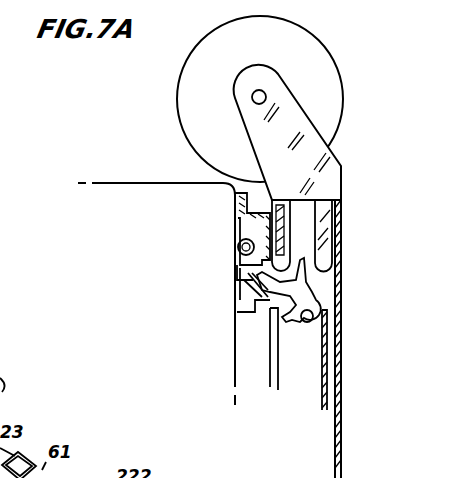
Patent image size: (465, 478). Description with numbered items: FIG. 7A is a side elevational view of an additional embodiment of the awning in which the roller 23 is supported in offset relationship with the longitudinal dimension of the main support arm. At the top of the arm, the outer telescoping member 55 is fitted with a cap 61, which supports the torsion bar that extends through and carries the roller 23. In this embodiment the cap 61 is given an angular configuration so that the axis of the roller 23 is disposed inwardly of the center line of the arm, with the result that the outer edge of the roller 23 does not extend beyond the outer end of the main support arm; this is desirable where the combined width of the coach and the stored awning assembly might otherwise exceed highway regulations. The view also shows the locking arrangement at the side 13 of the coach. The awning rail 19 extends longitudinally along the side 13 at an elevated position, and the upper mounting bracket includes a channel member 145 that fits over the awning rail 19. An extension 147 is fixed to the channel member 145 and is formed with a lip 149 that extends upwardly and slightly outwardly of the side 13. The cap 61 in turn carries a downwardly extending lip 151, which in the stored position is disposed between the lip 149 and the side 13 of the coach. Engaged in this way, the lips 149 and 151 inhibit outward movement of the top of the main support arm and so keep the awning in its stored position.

The roller 23 is at (312, 62).
The cap 61 is at (312, 155).
The channel member 145 is at (237, 197).
The lip 151 is at (278, 248).
The awning rail 19 is at (237, 246).
The lip 149 is at (300, 283).
The outer telescoping member 55 is at (343, 294).
The extension 147 is at (258, 308).
The side 13 is at (232, 360).